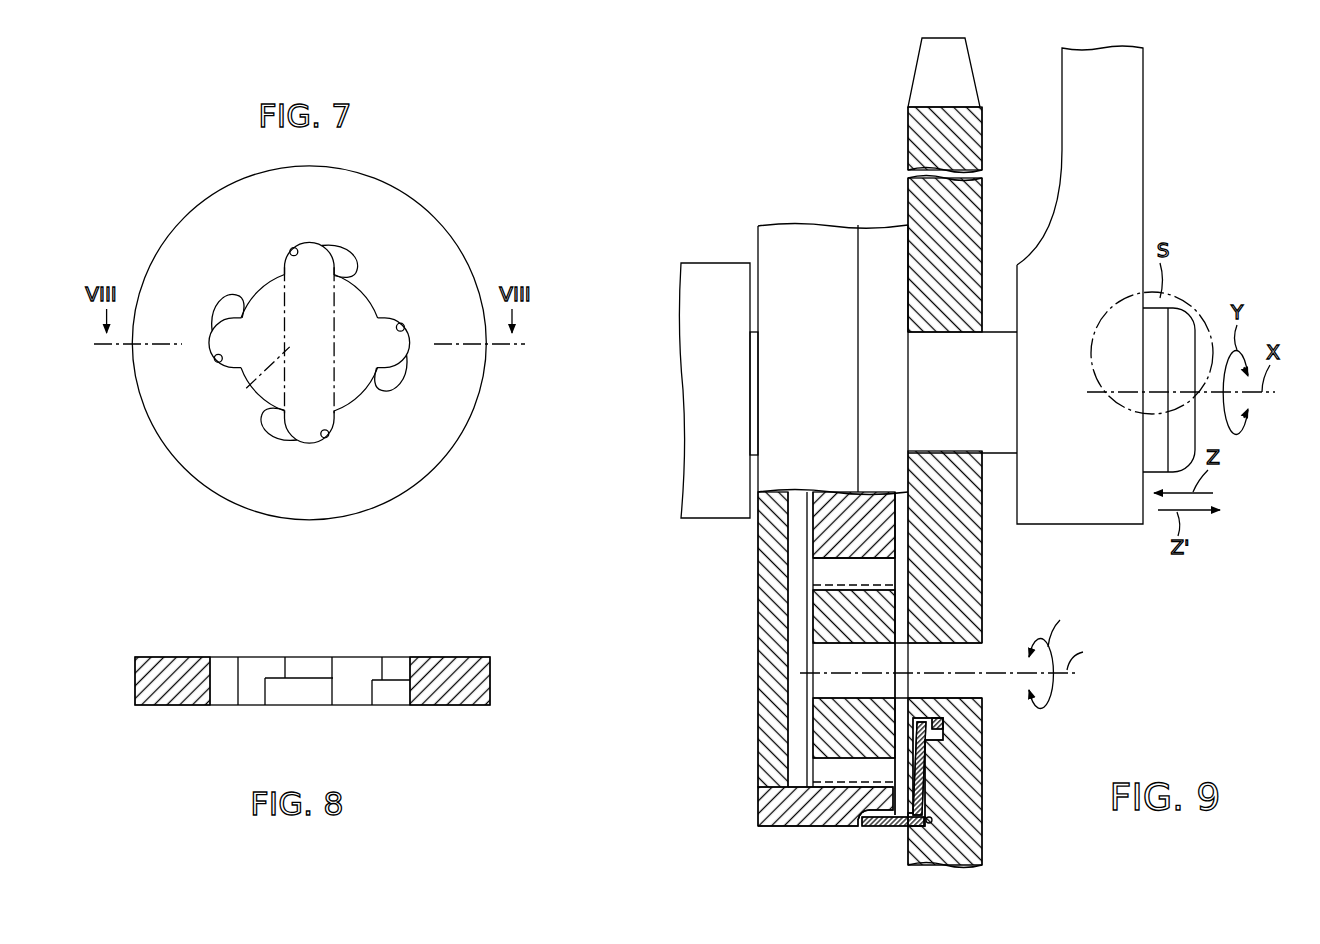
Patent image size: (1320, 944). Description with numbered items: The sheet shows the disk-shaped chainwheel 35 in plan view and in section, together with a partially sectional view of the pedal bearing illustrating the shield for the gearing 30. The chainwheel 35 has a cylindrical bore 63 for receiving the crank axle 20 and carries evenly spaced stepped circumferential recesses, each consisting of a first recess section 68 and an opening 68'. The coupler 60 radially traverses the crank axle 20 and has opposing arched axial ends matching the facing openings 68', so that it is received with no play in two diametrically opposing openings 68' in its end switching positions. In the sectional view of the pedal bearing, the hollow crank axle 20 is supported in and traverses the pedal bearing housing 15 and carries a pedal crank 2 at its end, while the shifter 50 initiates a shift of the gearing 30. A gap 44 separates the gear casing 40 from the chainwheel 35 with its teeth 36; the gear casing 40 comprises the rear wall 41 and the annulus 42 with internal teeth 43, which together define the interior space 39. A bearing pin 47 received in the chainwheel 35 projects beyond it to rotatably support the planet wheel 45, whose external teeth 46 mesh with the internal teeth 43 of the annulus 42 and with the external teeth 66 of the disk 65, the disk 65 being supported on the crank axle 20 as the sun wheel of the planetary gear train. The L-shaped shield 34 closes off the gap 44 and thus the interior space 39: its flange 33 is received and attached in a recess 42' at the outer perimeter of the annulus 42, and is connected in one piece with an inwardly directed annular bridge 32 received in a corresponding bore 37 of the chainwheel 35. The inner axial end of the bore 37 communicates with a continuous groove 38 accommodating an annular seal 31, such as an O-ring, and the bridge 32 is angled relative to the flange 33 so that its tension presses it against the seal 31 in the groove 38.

In FIG. 9, the pedal crank 2 is at (1130, 172).
In FIG. 9, the pedal bearing housing 15 is at (710, 277).
In FIG. 9, the crank axle 20 is at (1000, 344).
In FIG. 9, the gearing 30 is at (1072, 703).
In FIG. 9, the annular seal 31 is at (945, 722).
In FIG. 9, the annular bridge 32 is at (925, 795).
In FIG. 9, the flange 33 is at (880, 238).
In FIG. 9, the shield 34 is at (880, 832).
In FIG. 7, the chainwheel 35 is at (198, 229).
In FIG. 8, the chainwheel 35 is at (165, 667).
In FIG. 9, the chainwheel 35 is at (970, 120).
In FIG. 9, the teeth 36 is at (933, 63).
In FIG. 9, the bore 37 is at (934, 818).
In FIG. 9, the groove 38 is at (940, 742).
In FIG. 9, the interior space 39 is at (800, 660).
In FIG. 9, the gear casing 40 is at (799, 216).
In FIG. 9, the rear wall 41 is at (765, 700).
In FIG. 9, the annulus 42 is at (825, 846).
In FIG. 9, the recess 42' is at (840, 845).
In FIG. 9, the internal teeth 43 is at (805, 775).
In FIG. 9, the gap 44 is at (905, 550).
In FIG. 9, the planet wheel 45 is at (815, 613).
In FIG. 9, the external teeth 46 is at (815, 583).
In FIG. 9, the bearing pin 47 is at (967, 663).
In FIG. 9, the shifter 50 is at (1186, 288).
In FIG. 7, the coupler 60 is at (246, 388).
In FIG. 7, the cylindrical bore 63 is at (264, 290).
In FIG. 8, the cylindrical bore 63 is at (260, 668).
In FIG. 9, the disk 65 is at (828, 505).
In FIG. 9, the external teeth 66 is at (812, 572).
In FIG. 7, the first recess section 68 is at (323, 349).
In FIG. 8, the first recess section 68 is at (337, 719).
In FIG. 7, the opening 68' is at (303, 336).
In FIG. 8, the opening 68' is at (307, 679).